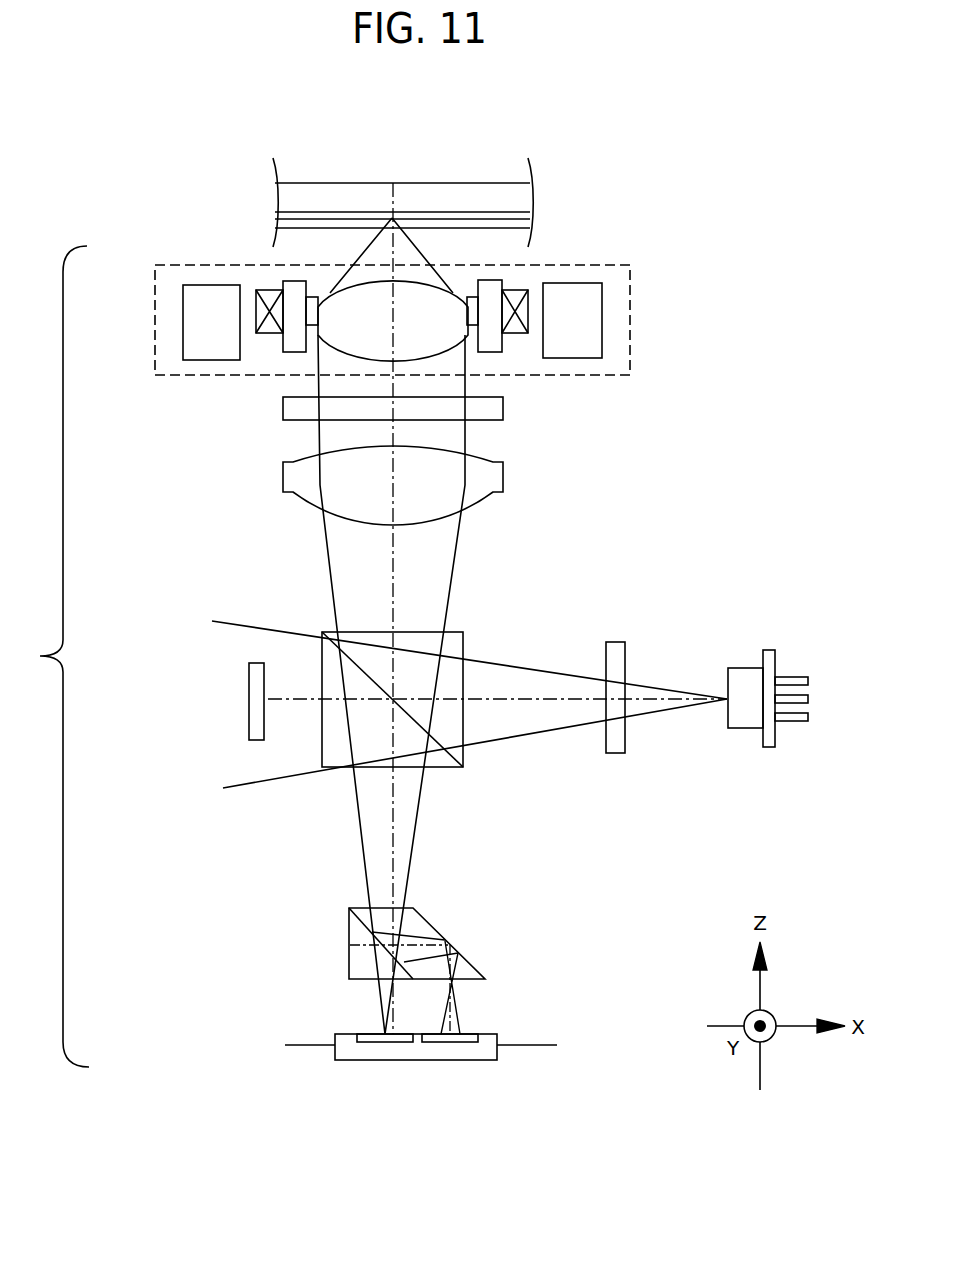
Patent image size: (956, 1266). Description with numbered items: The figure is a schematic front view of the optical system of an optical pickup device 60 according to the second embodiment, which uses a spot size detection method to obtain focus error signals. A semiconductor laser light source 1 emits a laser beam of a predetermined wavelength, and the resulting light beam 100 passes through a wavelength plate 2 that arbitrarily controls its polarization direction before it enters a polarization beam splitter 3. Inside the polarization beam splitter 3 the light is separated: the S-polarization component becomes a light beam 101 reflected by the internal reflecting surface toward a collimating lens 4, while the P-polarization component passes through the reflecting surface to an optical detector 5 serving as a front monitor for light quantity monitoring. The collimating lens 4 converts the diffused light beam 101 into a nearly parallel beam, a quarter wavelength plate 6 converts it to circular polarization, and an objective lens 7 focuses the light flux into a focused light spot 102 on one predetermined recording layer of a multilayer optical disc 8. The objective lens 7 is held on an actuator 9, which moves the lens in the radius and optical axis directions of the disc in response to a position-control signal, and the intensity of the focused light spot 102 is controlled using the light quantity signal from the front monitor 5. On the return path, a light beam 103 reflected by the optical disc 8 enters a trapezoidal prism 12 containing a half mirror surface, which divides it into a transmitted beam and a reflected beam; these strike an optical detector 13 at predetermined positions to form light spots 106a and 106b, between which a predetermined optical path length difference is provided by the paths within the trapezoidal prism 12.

The semiconductor laser light source 1 is at (750, 668).
The wavelength plate 2 is at (612, 642).
The polarization beam splitter 3 is at (327, 652).
The collimating lens 4 is at (503, 475).
The optical detector (front monitor) 5 is at (252, 683).
The quarter wavelength plate 6 is at (503, 408).
The objective lens 7 is at (353, 310).
The multilayer optical disc 8 is at (470, 190).
The actuator 9 is at (591, 263).
The trapezoidal prism 12 is at (431, 922).
The optical detector 13 is at (418, 1061).
The optical pickup device 60 is at (47, 656).
The light beam 100 is at (538, 670).
The light beam 101 is at (447, 582).
The focused light spot 102 is at (392, 218).
The light beam 103 is at (390, 801).
The light spot 106a is at (380, 1026).
The light spot 106b is at (457, 1026).